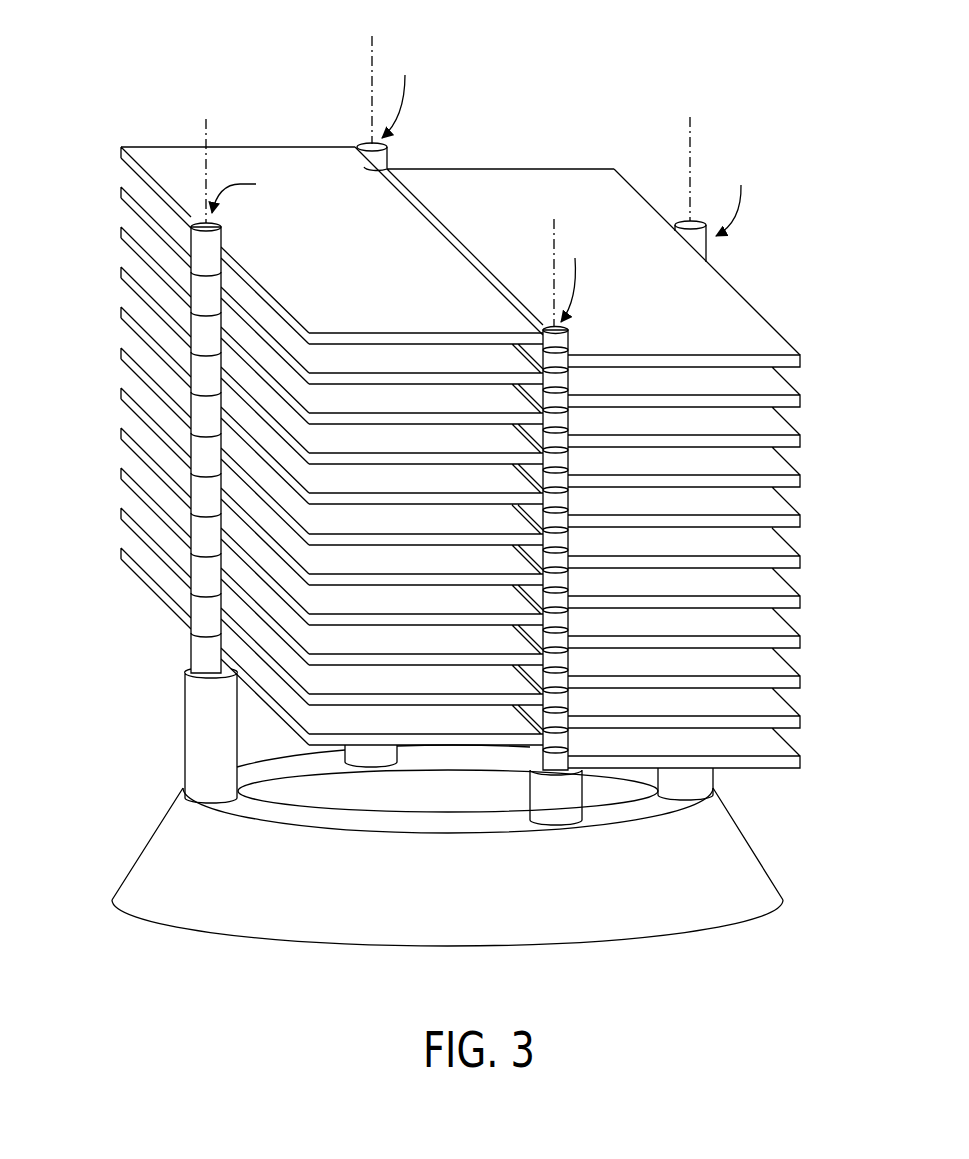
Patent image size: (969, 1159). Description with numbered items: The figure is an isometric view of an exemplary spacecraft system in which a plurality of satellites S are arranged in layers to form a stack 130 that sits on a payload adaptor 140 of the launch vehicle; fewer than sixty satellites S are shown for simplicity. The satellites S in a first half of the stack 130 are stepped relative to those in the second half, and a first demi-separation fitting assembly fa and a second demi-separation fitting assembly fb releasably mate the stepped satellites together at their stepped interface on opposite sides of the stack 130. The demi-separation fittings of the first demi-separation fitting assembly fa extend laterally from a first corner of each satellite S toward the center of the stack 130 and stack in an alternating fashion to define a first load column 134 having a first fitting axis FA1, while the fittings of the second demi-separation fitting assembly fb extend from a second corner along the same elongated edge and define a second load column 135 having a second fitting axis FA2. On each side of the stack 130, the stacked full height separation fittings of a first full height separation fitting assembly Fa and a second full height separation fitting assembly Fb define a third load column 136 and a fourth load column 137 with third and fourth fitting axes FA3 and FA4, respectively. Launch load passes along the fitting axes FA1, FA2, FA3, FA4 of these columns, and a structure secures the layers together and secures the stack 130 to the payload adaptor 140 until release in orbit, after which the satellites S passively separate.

The stack 130 is at (786, 310).
The first load column 134 is at (394, 148).
The second load column 135 is at (577, 386).
The third load column 136 is at (184, 316).
The fourth load column 137 is at (716, 253).
The payload adaptor 140 is at (725, 866).
The satellite S is at (797, 546).
The first fitting axis FA1 is at (371, 77).
The second fitting axis FA2 is at (553, 260).
The third fitting axis FA3 is at (206, 158).
The fourth fitting axis FA4 is at (690, 155).
The first full height separation fitting assembly Fa is at (249, 192).
The first demi-separation fitting assembly fa is at (398, 93).
The second full height separation fitting assembly Fb is at (735, 197).
The second demi-separation fitting assembly fb is at (573, 277).